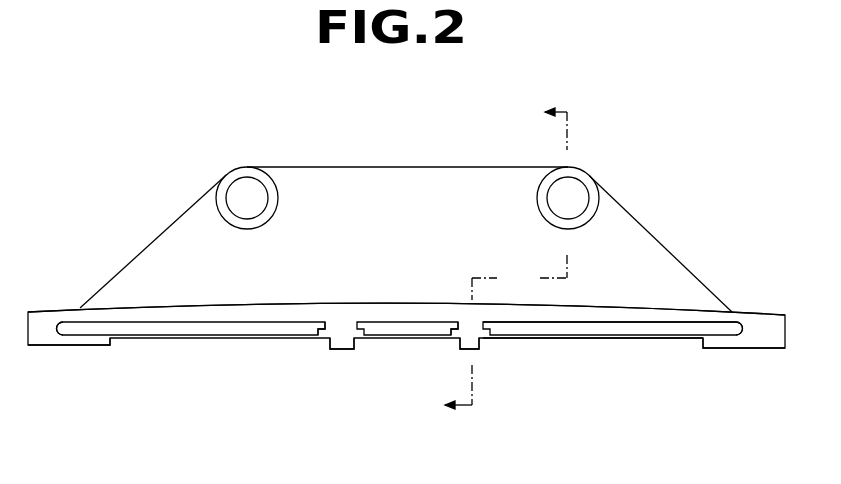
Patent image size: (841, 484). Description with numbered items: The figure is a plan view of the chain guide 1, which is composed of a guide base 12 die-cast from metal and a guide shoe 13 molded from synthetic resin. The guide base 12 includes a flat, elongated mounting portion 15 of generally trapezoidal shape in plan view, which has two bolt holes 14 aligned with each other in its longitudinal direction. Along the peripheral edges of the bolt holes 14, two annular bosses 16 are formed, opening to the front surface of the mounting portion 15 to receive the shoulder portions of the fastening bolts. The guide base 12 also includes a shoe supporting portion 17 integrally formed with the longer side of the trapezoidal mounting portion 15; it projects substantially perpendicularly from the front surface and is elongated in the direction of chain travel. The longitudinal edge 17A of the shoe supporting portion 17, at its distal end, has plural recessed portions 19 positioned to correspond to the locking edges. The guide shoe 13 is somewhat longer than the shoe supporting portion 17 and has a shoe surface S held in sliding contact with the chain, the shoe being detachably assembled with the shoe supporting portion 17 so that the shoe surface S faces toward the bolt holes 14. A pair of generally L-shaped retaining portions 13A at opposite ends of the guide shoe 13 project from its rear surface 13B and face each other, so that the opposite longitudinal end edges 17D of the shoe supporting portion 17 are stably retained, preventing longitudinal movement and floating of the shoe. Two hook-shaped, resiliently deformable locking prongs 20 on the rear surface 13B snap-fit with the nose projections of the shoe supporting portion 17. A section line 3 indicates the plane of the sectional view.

The chain guide 1 is at (222, 345).
The section line for FIG. 3 is at (496, 259).
The guide base 12 is at (677, 252).
The guide shoe 13 is at (753, 310).
The L-shaped retaining portions 13A is at (92, 342).
The rear surface of guide shoe 13B is at (557, 325).
The bolt holes 14 is at (243, 197).
The mounting portion 15 is at (424, 167).
The annular bosses 16 is at (259, 168).
The shoe supporting portion 17 is at (604, 337).
The longitudinal edge of shoe supporting portion 17A is at (658, 331).
The longitudinal end edges of shoe supporting portion 17D is at (78, 330).
The recessed portions 19 is at (317, 330).
The hook-shaped locking prongs 20 is at (342, 338).
The shoe surface S is at (380, 302).